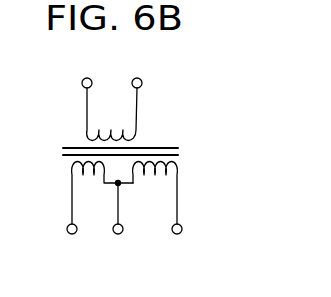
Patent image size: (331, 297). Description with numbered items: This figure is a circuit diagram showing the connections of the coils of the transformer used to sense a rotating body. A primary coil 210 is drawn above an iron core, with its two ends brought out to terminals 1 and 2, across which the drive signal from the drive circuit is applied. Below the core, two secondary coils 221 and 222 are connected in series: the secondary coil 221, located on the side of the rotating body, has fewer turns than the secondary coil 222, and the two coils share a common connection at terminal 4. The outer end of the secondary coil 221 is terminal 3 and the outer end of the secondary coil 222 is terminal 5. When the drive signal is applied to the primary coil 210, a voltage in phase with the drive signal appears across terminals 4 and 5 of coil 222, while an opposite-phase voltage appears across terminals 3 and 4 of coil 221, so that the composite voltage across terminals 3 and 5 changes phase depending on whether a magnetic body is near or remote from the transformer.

The primary coil 210 is at (112, 127).
The secondary coil 221 is at (90, 172).
The secondary coil 222 is at (155, 173).
The terminal 1 is at (91, 79).
The terminal 2 is at (148, 70).
The terminal 3 is at (75, 233).
The terminal 4 is at (121, 233).
The terminal 5 is at (180, 233).